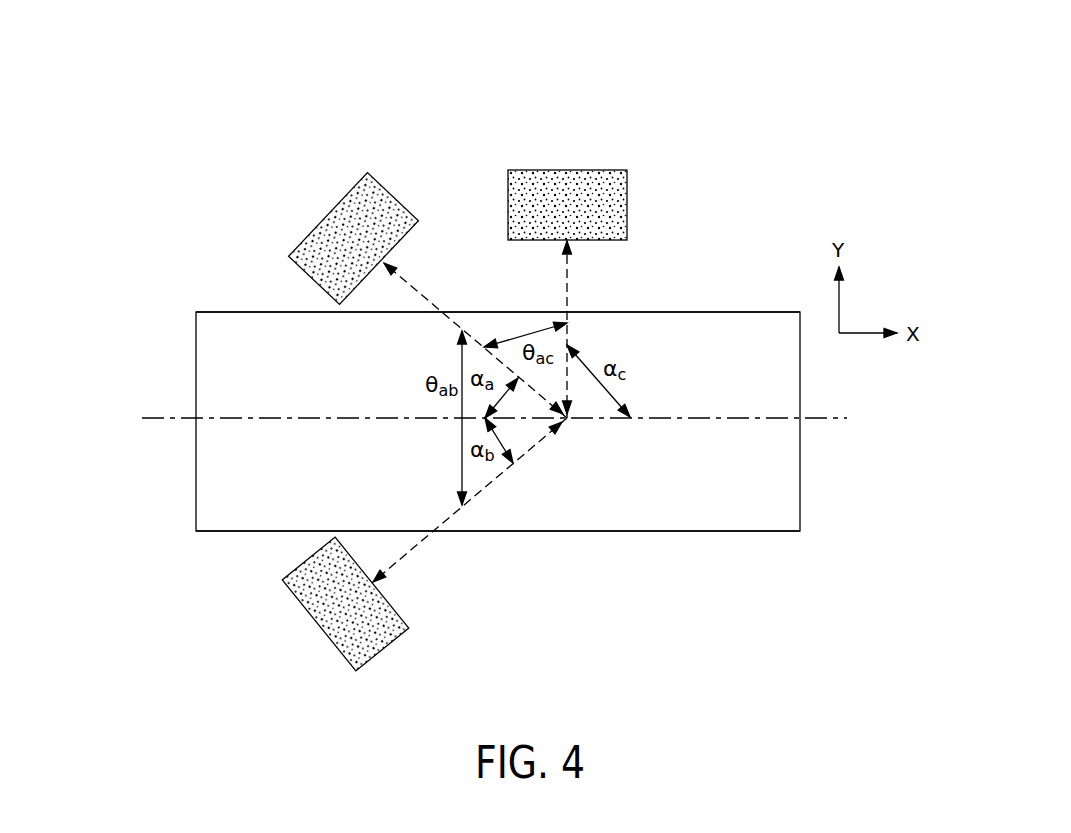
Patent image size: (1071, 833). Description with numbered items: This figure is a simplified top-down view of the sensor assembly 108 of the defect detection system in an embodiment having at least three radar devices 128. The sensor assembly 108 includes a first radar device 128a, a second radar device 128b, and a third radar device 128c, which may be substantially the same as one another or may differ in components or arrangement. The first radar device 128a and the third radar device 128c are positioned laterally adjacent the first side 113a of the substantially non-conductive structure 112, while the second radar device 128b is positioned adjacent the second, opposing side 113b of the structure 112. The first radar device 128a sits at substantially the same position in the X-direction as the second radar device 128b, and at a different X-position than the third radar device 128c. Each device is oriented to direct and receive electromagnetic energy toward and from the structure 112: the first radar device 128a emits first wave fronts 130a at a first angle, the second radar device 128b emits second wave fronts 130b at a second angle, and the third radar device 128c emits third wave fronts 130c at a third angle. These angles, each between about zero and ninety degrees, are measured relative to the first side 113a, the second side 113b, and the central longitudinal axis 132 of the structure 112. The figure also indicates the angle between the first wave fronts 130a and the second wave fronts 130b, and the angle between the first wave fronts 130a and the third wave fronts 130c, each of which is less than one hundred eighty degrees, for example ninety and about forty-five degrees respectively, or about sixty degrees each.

The sensor assembly 108 is at (636, 91).
The substantially non-conductive structure 112 is at (655, 515).
The first side 113a is at (705, 311).
The second side 113b is at (725, 531).
The radar devices 128 is at (77, 185).
The first radar device 128a is at (335, 208).
The second radar device 128b is at (303, 612).
The third radar device 128c is at (508, 172).
The first wave fronts 130a is at (417, 290).
The second wave fronts 130b is at (503, 469).
The third wave fronts 130c is at (573, 270).
The central longitudinal axis 132 is at (837, 420).